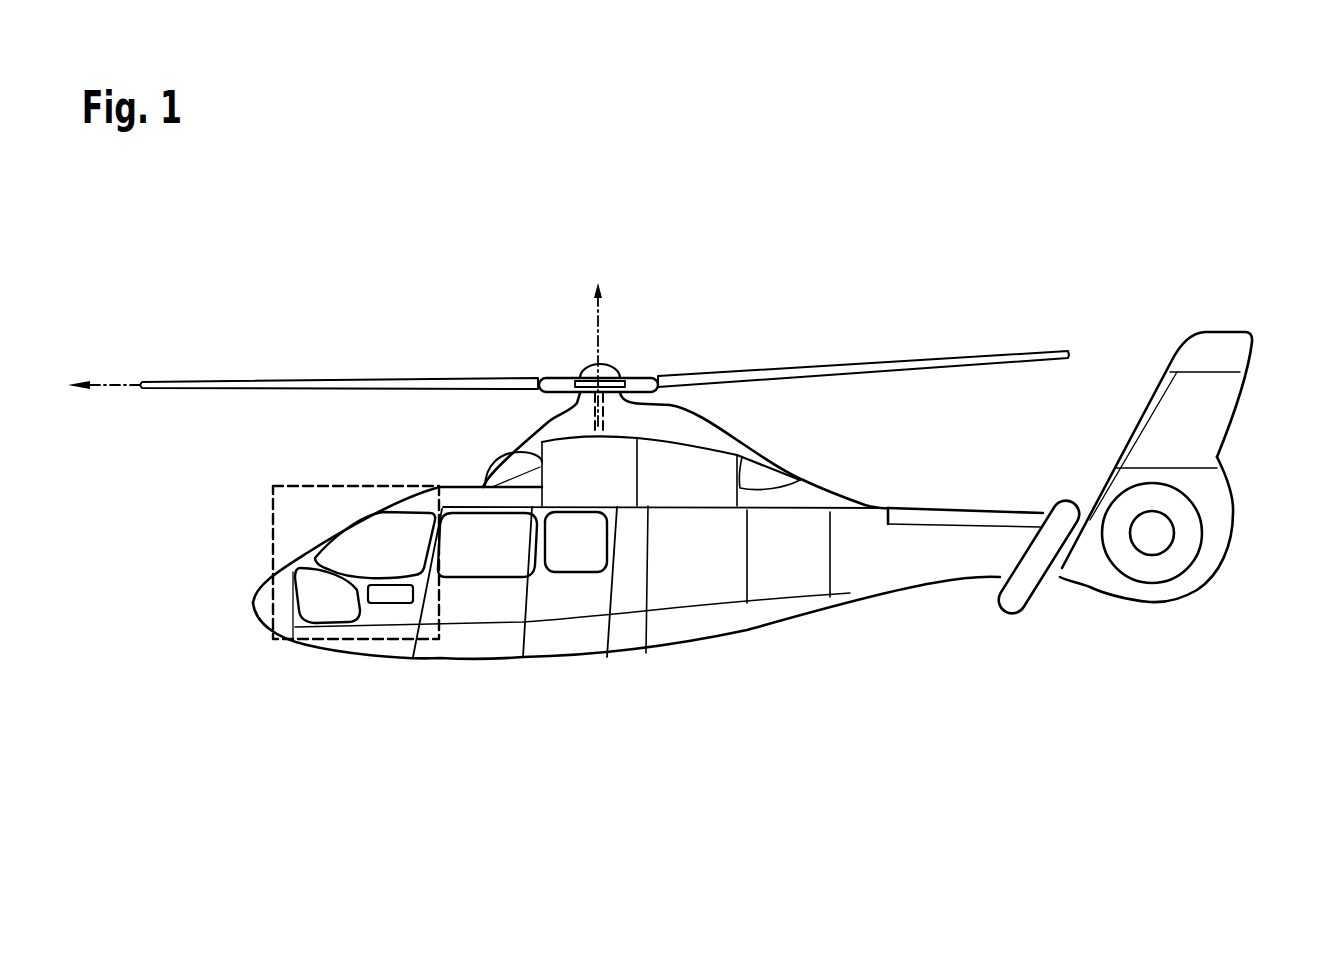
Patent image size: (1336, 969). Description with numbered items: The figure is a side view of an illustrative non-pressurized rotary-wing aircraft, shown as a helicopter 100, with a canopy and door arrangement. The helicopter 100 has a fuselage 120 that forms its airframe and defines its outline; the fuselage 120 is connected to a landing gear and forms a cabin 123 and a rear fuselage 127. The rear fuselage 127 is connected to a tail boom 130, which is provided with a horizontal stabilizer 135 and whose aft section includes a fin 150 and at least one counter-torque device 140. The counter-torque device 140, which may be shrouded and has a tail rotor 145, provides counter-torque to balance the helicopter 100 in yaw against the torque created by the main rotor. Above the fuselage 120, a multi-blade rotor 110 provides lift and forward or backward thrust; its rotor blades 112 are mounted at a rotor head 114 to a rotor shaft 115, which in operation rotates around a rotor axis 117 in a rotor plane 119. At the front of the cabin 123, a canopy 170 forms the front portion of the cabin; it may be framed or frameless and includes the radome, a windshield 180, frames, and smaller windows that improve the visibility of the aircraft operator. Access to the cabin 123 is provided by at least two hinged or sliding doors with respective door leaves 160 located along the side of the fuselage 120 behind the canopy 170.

The helicopter 100 is at (424, 268).
The multi-blade rotor 110 is at (400, 363).
The rotor blades 112 is at (242, 383).
The rotor head 114 is at (635, 346).
The rotor shaft 115 is at (592, 425).
The rotor axis 117 is at (596, 312).
The rotor plane 119 is at (110, 385).
The fuselage 120 is at (678, 632).
The cabin 123 is at (361, 542).
The rear fuselage 127 is at (783, 633).
The tail boom 130 is at (973, 538).
The horizontal stabilizer 135 is at (1032, 595).
The counter-torque device 140 is at (1219, 511).
The tail rotor 145 is at (1171, 568).
The fin 150 is at (1210, 366).
The door leaves 160 is at (472, 598).
The canopy 170 is at (330, 483).
The windshield 180 is at (393, 547).